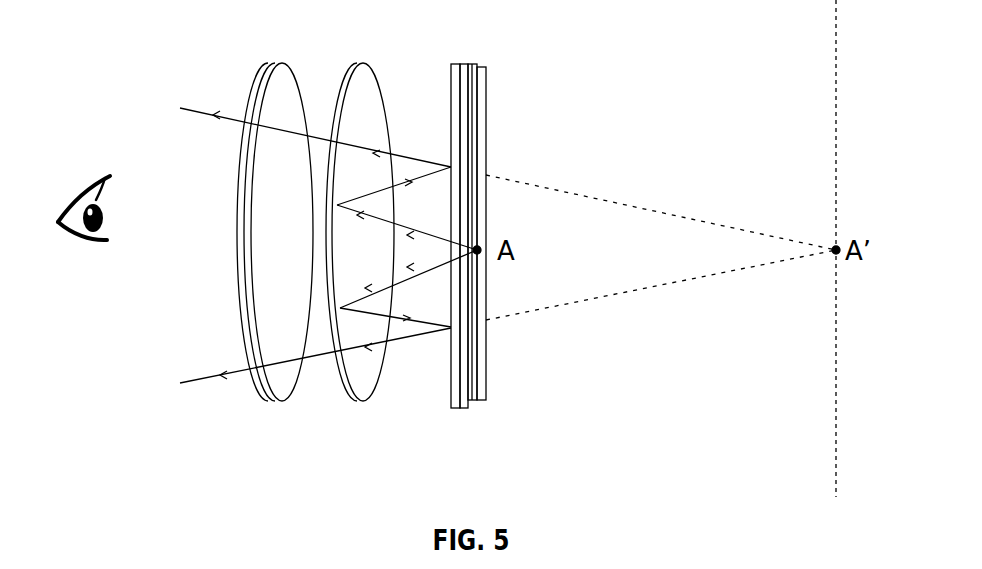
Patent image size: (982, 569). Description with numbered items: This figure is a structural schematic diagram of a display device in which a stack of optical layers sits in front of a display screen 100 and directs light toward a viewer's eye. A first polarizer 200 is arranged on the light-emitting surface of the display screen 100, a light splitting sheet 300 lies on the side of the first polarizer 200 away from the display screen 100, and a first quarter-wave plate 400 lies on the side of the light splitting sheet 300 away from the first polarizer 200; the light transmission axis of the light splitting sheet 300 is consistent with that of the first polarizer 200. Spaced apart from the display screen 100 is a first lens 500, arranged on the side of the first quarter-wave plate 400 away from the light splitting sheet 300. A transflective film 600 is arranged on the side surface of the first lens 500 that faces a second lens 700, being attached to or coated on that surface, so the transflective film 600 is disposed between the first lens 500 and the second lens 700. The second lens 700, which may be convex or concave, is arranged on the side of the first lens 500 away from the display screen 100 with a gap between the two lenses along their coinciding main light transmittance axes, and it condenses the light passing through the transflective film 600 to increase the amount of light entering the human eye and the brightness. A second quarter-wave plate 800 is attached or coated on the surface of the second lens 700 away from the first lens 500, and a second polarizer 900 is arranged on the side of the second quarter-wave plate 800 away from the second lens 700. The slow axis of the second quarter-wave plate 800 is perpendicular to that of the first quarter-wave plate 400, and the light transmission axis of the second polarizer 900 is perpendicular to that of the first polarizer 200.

The display screen 100 is at (482, 118).
The first polarizer 200 is at (470, 77).
The light splitting sheet 300 is at (468, 397).
The first quarter-wave plate 400 is at (457, 97).
The first lens 500 is at (367, 378).
The transflective film 600 is at (345, 80).
The second lens 700 is at (285, 378).
The second quarter-wave plate 800 is at (262, 398).
The second polarizer 900 is at (253, 78).